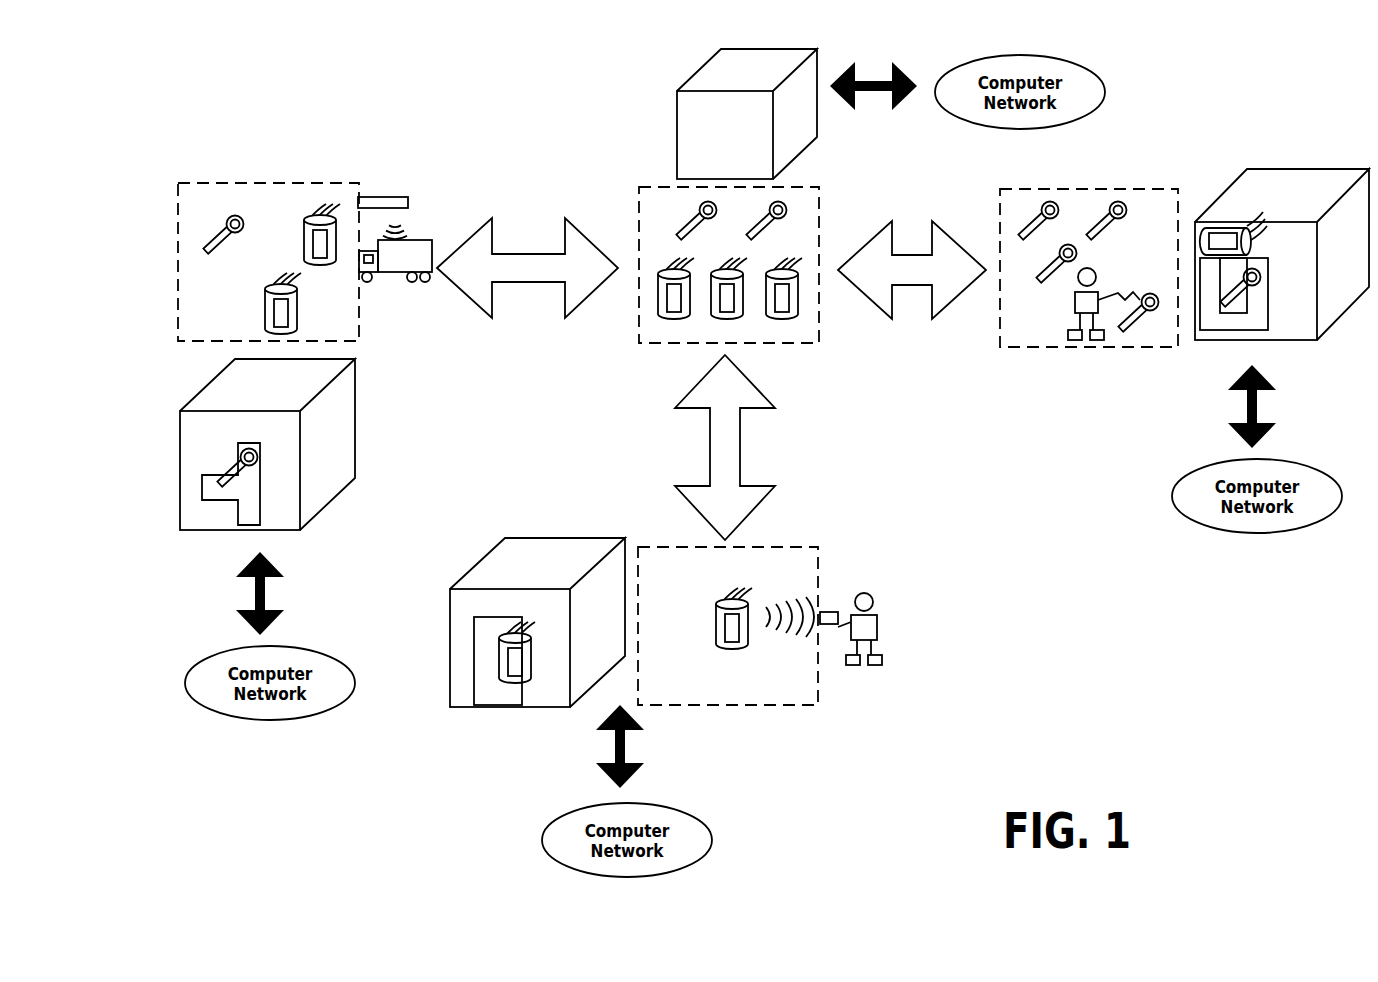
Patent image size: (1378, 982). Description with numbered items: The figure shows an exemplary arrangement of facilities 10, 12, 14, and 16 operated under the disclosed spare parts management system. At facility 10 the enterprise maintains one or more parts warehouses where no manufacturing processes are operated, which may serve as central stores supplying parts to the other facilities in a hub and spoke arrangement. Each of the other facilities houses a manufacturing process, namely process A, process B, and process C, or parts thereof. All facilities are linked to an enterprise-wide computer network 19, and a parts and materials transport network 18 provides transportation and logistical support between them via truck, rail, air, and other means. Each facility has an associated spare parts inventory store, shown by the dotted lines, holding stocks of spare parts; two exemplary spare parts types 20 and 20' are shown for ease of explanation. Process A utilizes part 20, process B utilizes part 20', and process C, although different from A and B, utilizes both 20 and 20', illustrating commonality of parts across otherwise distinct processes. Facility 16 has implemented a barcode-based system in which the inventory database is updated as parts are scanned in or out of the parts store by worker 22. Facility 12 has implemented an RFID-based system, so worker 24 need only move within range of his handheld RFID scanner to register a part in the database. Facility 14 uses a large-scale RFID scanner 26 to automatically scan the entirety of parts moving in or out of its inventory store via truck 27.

The facility 10 is at (777, 56).
The facility 12 is at (538, 536).
The facility 14 is at (355, 427).
The facility 16 is at (1297, 167).
The parts and materials transport network 18 is at (527, 282).
The enterprise-wide computer network 19 is at (937, 80).
The spare parts type 20 is at (788, 411).
The spare parts type 20' is at (752, 310).
The worker 22 is at (1065, 345).
The worker 24 is at (873, 628).
The large-scale RFID scanner 26 is at (399, 199).
The truck 27 is at (398, 268).
The manufacturing process A is at (503, 633).
The manufacturing process B is at (255, 493).
The manufacturing process C is at (1262, 322).